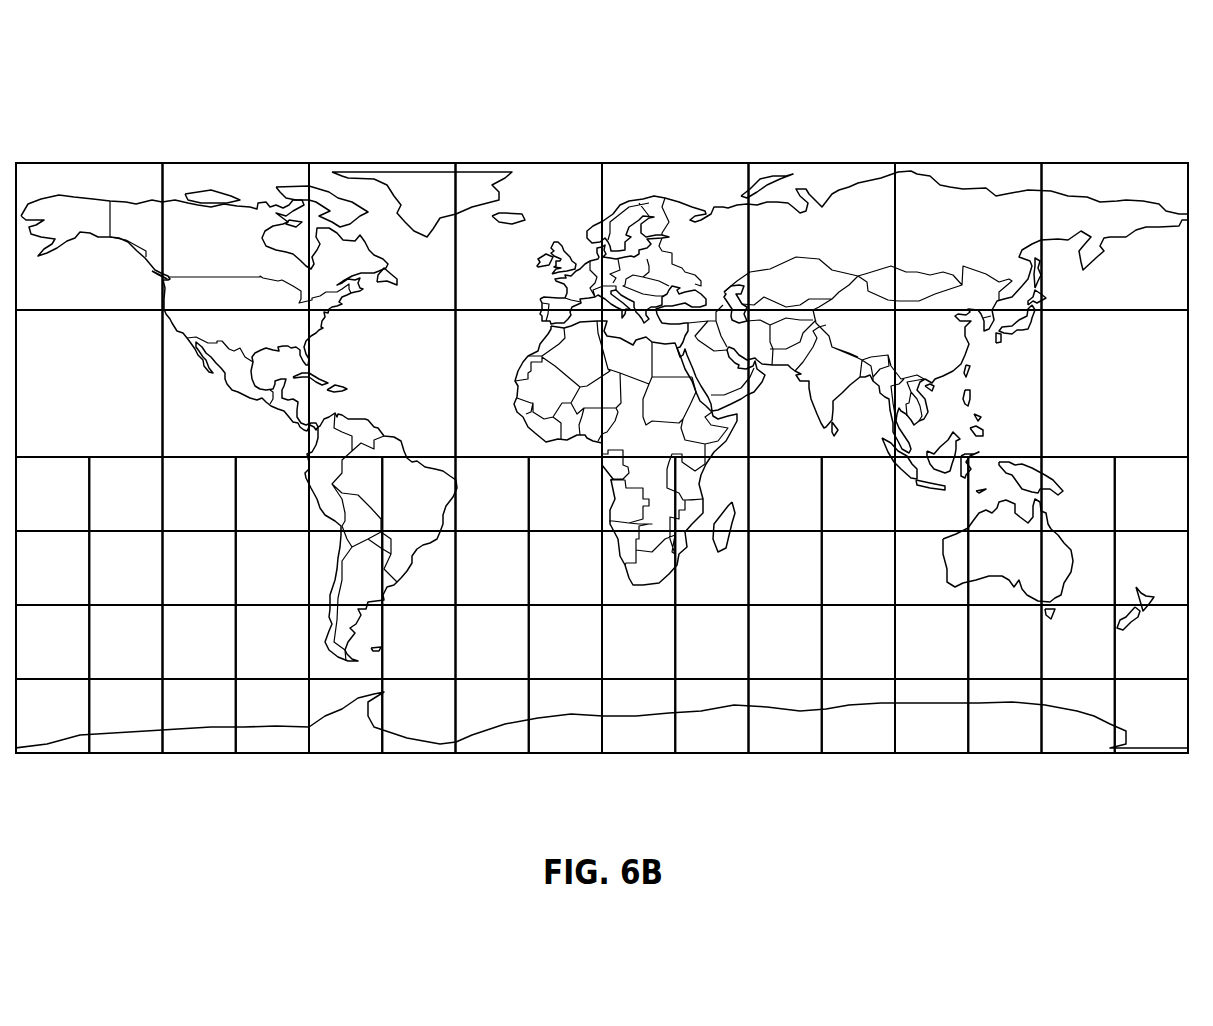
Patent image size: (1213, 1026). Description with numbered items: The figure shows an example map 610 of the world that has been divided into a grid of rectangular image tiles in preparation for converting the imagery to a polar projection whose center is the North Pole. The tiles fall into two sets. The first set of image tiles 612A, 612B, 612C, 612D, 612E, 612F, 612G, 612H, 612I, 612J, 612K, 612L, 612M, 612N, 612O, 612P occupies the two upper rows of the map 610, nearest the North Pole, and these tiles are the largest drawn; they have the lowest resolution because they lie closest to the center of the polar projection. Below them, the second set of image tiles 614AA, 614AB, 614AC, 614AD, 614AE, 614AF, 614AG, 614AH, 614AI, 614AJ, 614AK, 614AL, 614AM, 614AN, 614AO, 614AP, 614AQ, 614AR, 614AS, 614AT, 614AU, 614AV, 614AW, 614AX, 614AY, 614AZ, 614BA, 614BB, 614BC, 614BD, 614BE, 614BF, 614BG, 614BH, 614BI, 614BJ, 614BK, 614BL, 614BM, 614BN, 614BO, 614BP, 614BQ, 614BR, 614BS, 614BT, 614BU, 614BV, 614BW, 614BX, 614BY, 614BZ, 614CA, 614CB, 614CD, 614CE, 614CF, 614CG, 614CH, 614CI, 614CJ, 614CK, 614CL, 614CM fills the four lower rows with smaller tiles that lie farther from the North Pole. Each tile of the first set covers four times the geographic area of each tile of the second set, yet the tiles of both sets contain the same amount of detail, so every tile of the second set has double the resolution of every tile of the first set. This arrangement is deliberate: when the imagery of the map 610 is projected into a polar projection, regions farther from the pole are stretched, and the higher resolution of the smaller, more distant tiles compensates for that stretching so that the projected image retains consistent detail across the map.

The map 610 is at (109, 72).
The first set image tile 612A is at (60, 187).
The first set image tile 612B is at (206, 187).
The first set image tile 612C is at (353, 187).
The first set image tile 612D is at (500, 187).
The first set image tile 612E is at (646, 187).
The first set image tile 612F is at (792, 187).
The first set image tile 612G is at (939, 187).
The first set image tile 612H is at (1086, 187).
The first set image tile 612I is at (54, 334).
The first set image tile 612J is at (204, 334).
The first set image tile 612K is at (353, 334).
The first set image tile 612L is at (500, 334).
The first set image tile 612M is at (648, 334).
The first set image tile 612N is at (792, 334).
The first set image tile 612O is at (939, 334).
The first set image tile 612P is at (1086, 334).
The second set image tile 614AA is at (72, 483).
The second set image tile 614AB is at (145, 483).
The second set image tile 614AC is at (218, 483).
The second set image tile 614AD is at (292, 483).
The second set image tile 614AE is at (365, 483).
The second set image tile 614AF is at (438, 483).
The second set image tile 614AG is at (512, 483).
The second set image tile 614AH is at (584, 483).
The second set image tile 614AI is at (651, 483).
The second set image tile 614AJ is at (727, 483).
The second set image tile 614AK is at (804, 483).
The second set image tile 614AL is at (878, 483).
The second set image tile 614AM is at (952, 483).
The second set image tile 614AN is at (1024, 483).
The second set image tile 614AO is at (1098, 483).
The second set image tile 614AP is at (1170, 483).
The second set image tile 614AQ is at (72, 557).
The second set image tile 614AR is at (145, 557).
The second set image tile 614AS is at (218, 557).
The second set image tile 614AT is at (292, 557).
The second set image tile 614AU is at (365, 557).
The second set image tile 614AV is at (438, 557).
The second set image tile 614AW is at (514, 557).
The second set image tile 614AX is at (584, 557).
The second set image tile 614AY is at (658, 557).
The second set image tile 614AZ is at (731, 557).
The second set image tile 614BA is at (804, 557).
The second set image tile 614BB is at (878, 557).
The second set image tile 614BC is at (951, 557).
The second set image tile 614BD is at (1024, 557).
The second set image tile 614BE is at (1098, 557).
The second set image tile 614BF is at (1170, 557).
The second set image tile 614BG is at (72, 631).
The second set image tile 614BH is at (145, 631).
The second set image tile 614BI is at (212, 631).
The second set image tile 614BJ is at (288, 631).
The second set image tile 614BK is at (365, 631).
The second set image tile 614BL is at (438, 631).
The second set image tile 614BM is at (512, 631).
The second set image tile 614BN is at (584, 631).
The second set image tile 614BO is at (658, 631).
The second set image tile 614BP is at (731, 631).
The second set image tile 614BQ is at (804, 631).
The second set image tile 614BR is at (878, 631).
The second set image tile 614BS is at (951, 631).
The second set image tile 614BT is at (1024, 631).
The second set image tile 614BU is at (1098, 631).
The second set image tile 614BV is at (1170, 631).
The second set image tile 614BW is at (74, 705).
The second set image tile 614BX is at (145, 705).
The second set image tile 614BY is at (218, 705).
The second set image tile 614BZ is at (292, 705).
The second set image tile 614CA is at (365, 705).
The second set image tile 614CB is at (438, 705).
The second set image tile 614CD is at (512, 705).
The second set image tile 614CE is at (584, 705).
The second set image tile 614CF is at (658, 705).
The second set image tile 614CG is at (731, 705).
The second set image tile 614CH is at (804, 705).
The second set image tile 614CI is at (870, 705).
The second set image tile 614CJ is at (947, 705).
The second set image tile 614CK is at (1024, 705).
The second set image tile 614CL is at (1098, 705).
The second set image tile 614CM is at (1172, 705).